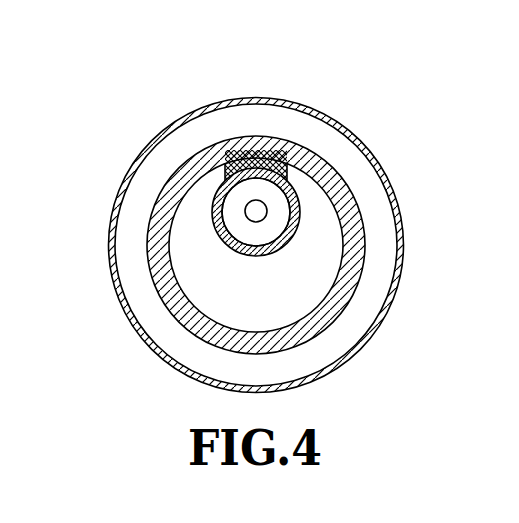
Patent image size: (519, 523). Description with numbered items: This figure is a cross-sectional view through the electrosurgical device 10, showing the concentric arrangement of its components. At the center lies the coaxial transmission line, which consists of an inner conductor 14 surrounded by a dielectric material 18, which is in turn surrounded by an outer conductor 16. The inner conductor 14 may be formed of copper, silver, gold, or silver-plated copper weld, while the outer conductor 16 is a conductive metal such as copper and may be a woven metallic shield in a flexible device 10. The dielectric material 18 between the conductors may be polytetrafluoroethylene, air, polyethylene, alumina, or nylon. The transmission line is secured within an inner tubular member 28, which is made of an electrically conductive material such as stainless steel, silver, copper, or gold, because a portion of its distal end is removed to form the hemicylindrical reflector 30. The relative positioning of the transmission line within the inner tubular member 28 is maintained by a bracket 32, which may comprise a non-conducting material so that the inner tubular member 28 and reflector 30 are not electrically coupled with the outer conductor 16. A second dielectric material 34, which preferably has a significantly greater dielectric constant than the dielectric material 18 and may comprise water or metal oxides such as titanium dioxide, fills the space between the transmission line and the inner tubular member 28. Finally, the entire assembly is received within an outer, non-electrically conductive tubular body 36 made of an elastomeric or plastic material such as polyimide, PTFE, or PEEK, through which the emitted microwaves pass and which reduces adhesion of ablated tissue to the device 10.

The electrosurgical device 10 is at (256, 206).
The inner conductor 14 is at (243, 210).
The outer conductor 16 is at (299, 228).
The dielectric material 18 is at (278, 210).
The inner tubular member 28 is at (357, 220).
The hemicylindrical reflector 30 is at (158, 277).
The bracket 32 is at (278, 158).
The dielectric material 34 is at (195, 240).
The outer tubular body 36 is at (355, 348).